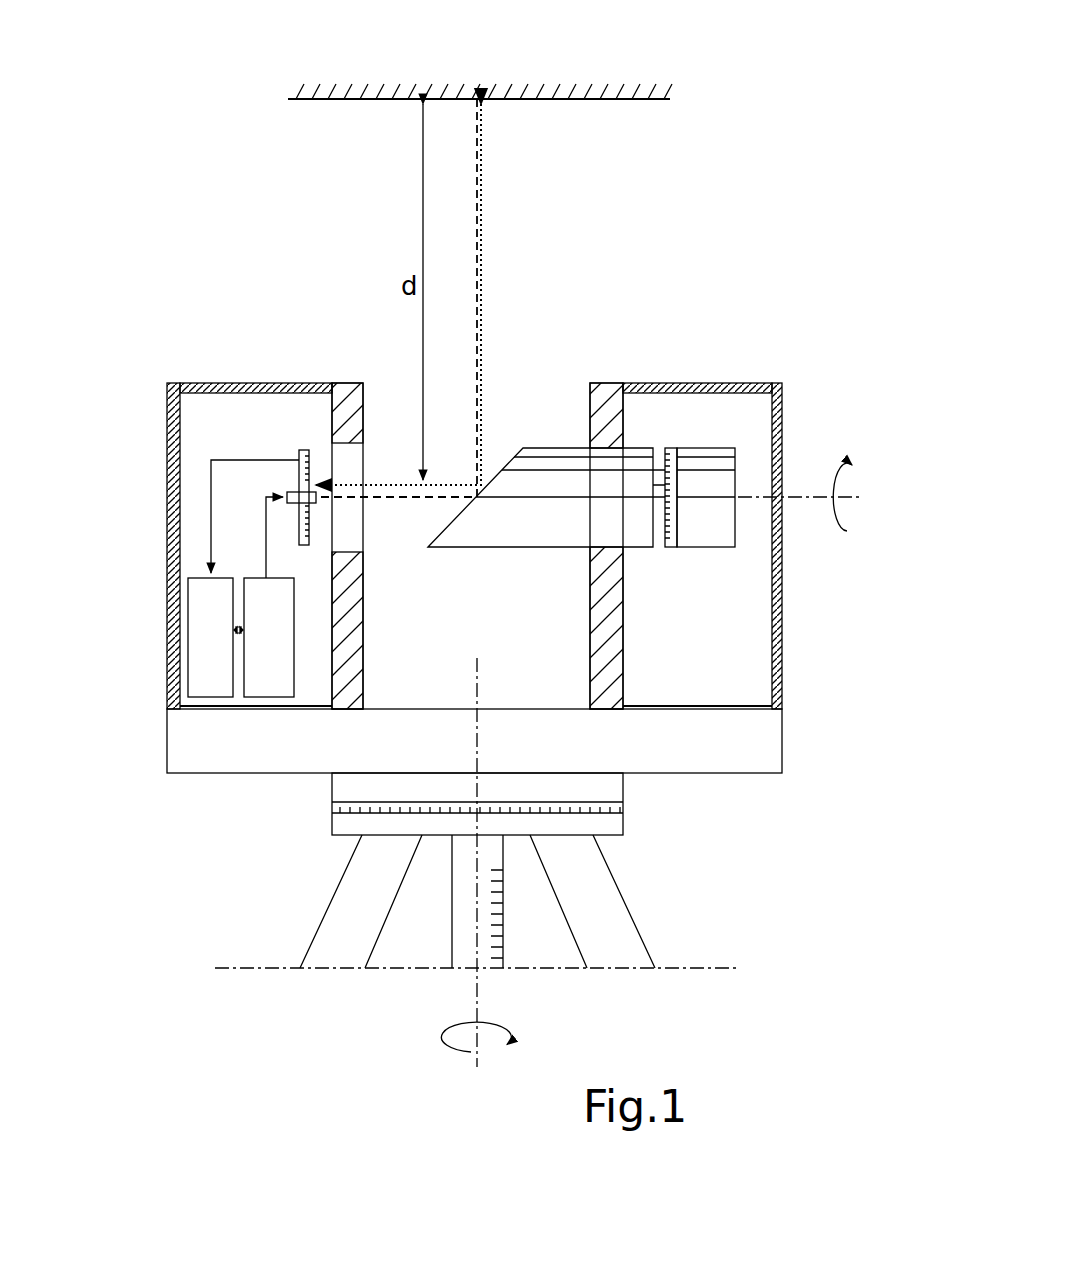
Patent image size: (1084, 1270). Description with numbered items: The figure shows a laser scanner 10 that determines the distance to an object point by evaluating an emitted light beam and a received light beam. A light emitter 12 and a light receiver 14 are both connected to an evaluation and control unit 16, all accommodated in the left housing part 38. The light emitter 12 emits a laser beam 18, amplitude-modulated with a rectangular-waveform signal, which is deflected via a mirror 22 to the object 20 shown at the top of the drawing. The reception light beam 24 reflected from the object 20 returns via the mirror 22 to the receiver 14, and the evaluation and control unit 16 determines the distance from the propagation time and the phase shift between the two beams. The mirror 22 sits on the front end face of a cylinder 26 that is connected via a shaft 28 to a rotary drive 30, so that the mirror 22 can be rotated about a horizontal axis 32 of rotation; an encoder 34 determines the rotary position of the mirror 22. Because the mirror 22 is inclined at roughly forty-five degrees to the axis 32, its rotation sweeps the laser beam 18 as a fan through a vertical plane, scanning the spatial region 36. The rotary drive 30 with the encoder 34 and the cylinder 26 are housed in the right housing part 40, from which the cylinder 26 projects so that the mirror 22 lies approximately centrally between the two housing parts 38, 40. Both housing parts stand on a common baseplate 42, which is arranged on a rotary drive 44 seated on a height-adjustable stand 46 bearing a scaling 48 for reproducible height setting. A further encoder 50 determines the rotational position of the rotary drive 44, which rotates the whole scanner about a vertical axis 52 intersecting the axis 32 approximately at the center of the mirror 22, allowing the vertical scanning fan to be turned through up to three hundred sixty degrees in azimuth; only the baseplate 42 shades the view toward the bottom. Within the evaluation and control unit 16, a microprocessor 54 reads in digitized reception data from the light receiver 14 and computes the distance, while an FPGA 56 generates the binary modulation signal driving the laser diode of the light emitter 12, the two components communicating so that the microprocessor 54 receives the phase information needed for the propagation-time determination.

The laser scanner 10 is at (778, 145).
The light emitter 12 is at (293, 492).
The light receiver 14 is at (302, 450).
The evaluation and control unit 16 is at (222, 715).
The laser beam 18 is at (475, 240).
The object 20 is at (633, 99).
The mirror 22 is at (448, 517).
The reception light beam 24 is at (481, 215).
The cylinder 26 is at (542, 547).
The shaft 28 is at (658, 510).
The rotary drive 30 is at (708, 535).
The axis of rotation 32 is at (812, 500).
The encoder 34 is at (665, 448).
The spatial region 36 is at (608, 284).
The housing part 38 is at (167, 430).
The housing part 40 is at (782, 410).
The baseplate 42 is at (753, 760).
The rotary drive 44 is at (617, 826).
The stand 46 is at (633, 942).
The scaling 48 is at (503, 930).
The further encoder 50 is at (623, 807).
The vertical axis 52 is at (480, 995).
The microprocessor 54 is at (207, 677).
The FPGA 56 is at (278, 687).